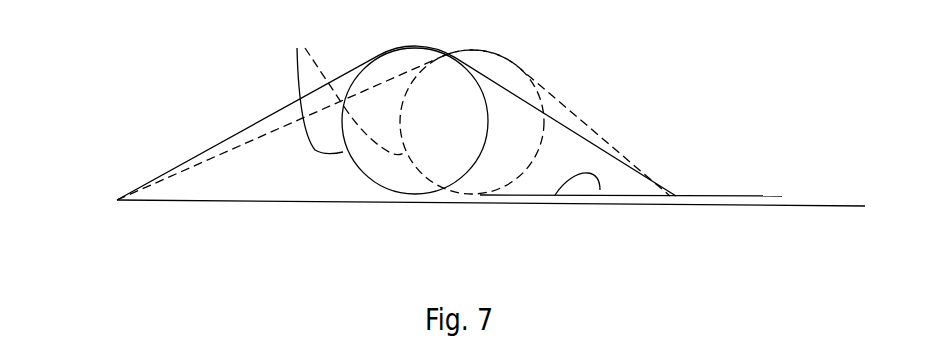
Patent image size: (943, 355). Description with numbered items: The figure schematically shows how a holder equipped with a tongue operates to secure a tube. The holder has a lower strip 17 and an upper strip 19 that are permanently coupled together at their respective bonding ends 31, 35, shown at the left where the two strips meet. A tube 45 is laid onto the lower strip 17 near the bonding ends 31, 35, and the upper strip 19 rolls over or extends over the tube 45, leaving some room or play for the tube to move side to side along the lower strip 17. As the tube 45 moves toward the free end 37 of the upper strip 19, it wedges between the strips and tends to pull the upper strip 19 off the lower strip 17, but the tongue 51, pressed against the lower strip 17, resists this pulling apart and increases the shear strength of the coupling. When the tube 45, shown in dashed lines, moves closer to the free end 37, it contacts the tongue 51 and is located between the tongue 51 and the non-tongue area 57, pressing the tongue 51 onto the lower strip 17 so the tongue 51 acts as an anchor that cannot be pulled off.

The lower strip 17 is at (270, 202).
The upper strip 19 is at (248, 142).
The bonding end 31 is at (75, 153).
The bonding end 35 is at (117, 200).
The free end 37 is at (782, 196).
The tube 45 is at (345, 83).
The tongue 51 is at (600, 190).
The non-tongue area 57 is at (603, 137).